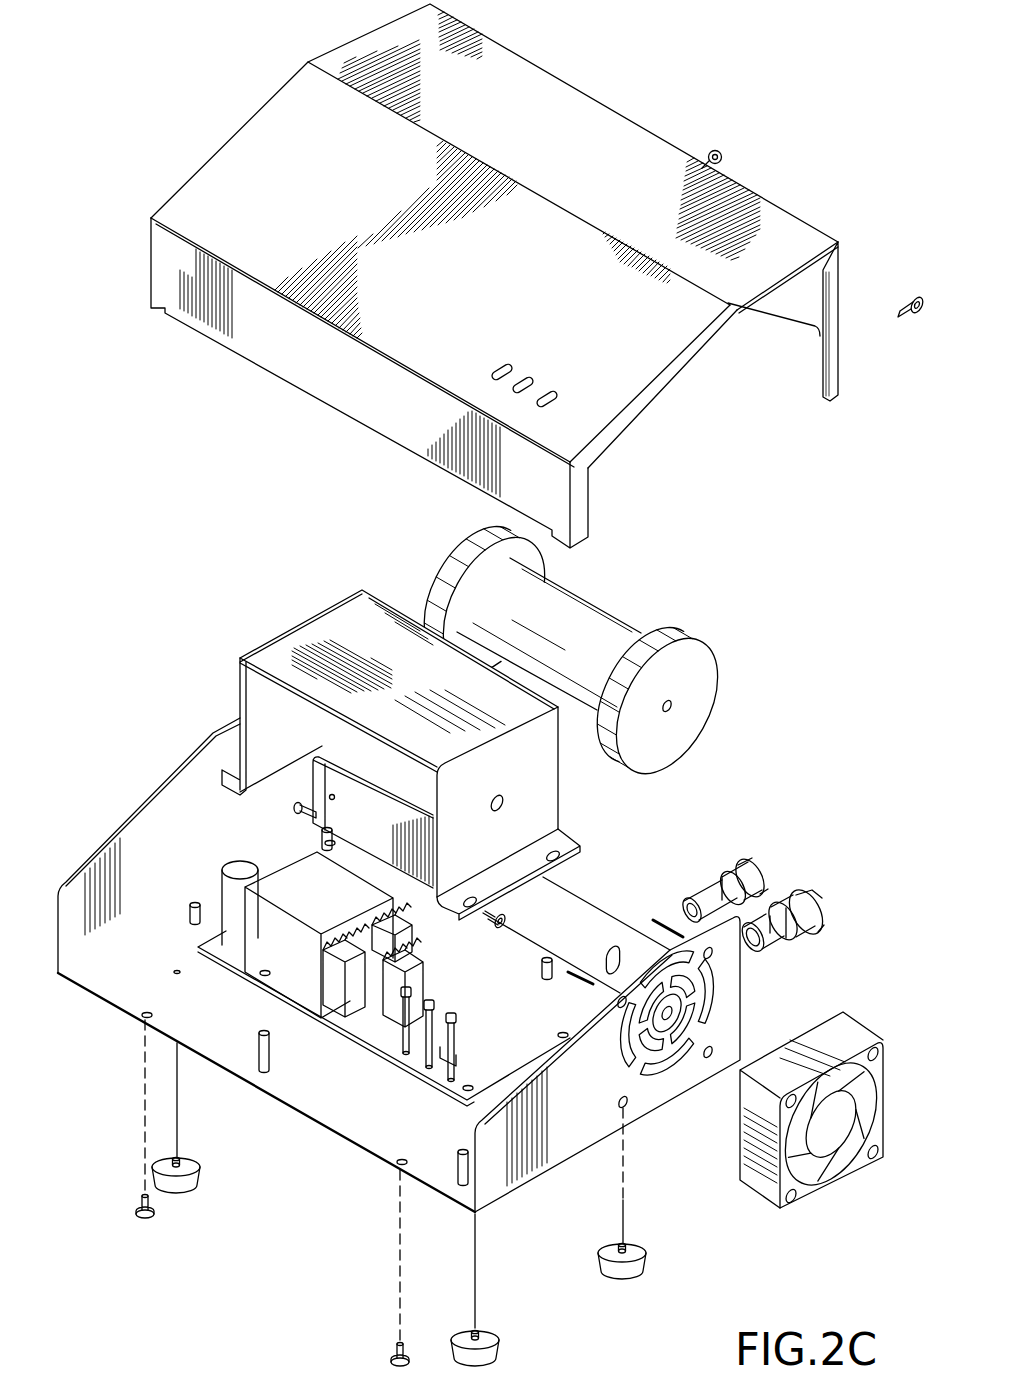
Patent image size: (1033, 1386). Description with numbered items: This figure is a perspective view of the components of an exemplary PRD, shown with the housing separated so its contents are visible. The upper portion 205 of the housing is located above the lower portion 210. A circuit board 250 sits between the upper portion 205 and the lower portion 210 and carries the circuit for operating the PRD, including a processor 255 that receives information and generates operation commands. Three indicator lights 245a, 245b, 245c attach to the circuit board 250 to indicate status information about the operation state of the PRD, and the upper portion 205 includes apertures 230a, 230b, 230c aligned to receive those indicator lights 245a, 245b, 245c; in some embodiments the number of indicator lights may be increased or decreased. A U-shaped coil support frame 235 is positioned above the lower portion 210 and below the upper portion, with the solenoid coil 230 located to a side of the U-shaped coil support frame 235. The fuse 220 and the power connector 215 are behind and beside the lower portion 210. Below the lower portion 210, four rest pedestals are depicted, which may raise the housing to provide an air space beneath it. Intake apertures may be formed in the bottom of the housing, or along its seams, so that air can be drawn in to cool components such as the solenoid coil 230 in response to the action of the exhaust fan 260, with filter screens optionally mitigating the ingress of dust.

The upper portion 205 is at (787, 230).
The lower portion 210 is at (496, 1186).
The power connector 215 is at (805, 897).
The fuse 220 is at (757, 862).
The solenoid coil 230 is at (640, 627).
The aperture 230a is at (500, 367).
The aperture 230b is at (527, 381).
The aperture 230c is at (556, 393).
The U-shaped coil support frame 235 is at (280, 648).
The indicator light 245a is at (407, 1037).
The indicator light 245b is at (430, 1058).
The indicator light 245c is at (450, 1073).
The circuit board 250 is at (273, 993).
The processor 255 is at (270, 940).
The exhaust fan 260 is at (850, 1032).